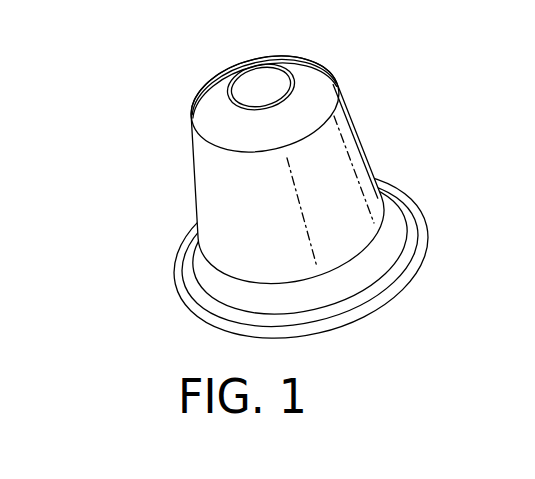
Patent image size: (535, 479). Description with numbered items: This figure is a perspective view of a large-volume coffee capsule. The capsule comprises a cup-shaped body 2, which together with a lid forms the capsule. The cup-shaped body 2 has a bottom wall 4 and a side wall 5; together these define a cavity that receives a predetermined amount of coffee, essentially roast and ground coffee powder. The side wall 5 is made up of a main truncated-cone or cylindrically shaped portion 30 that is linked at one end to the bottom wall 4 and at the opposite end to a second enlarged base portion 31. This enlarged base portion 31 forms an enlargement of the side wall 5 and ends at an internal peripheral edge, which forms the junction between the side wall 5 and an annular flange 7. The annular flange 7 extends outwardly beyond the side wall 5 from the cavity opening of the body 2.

The cup-shaped body 2 is at (93, 20).
The bottom wall 4 is at (317, 32).
The side wall 5 is at (195, 183).
The annular flange 7 is at (177, 292).
The main truncated-cone or cylindrically shaped portion 30 is at (359, 132).
The second enlarged base portion 31 is at (397, 218).